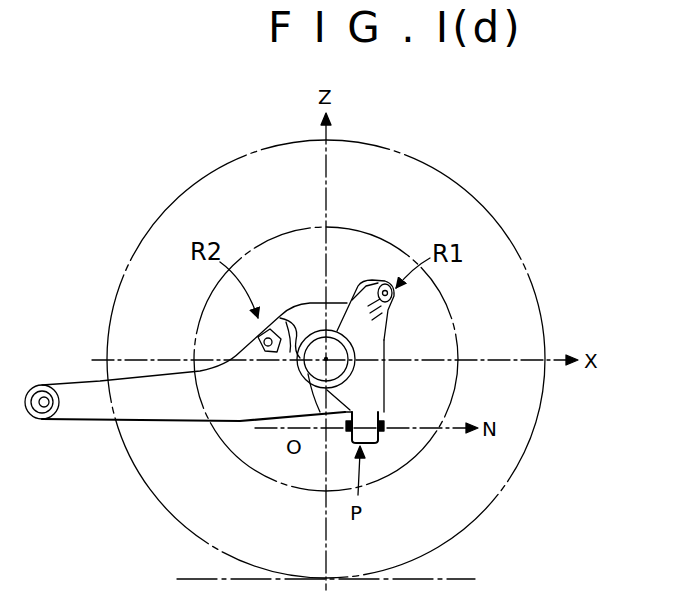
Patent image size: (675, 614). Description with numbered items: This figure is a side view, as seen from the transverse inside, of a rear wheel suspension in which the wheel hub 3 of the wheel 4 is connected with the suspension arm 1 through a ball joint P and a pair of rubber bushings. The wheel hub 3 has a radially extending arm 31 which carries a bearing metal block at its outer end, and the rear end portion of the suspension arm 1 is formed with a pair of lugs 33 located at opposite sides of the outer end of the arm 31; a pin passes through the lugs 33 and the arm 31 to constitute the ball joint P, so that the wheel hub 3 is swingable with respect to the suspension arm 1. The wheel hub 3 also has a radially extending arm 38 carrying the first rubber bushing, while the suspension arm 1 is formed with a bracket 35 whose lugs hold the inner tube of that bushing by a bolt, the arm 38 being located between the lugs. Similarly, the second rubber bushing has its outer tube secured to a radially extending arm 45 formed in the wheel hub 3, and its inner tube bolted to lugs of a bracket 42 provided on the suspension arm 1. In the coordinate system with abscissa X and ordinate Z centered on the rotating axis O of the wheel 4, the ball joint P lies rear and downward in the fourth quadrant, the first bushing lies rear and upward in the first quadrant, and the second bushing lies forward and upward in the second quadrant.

The suspension arm 1 is at (190, 412).
The wheel hub 3 is at (356, 349).
The wheel 4 is at (456, 173).
The radially extending arm 31 is at (360, 394).
The lugs 33 is at (382, 442).
The bracket 35 is at (394, 302).
The radially extending arm 38 is at (356, 300).
The bracket 42 is at (268, 357).
The radially extending arm 45 is at (297, 333).